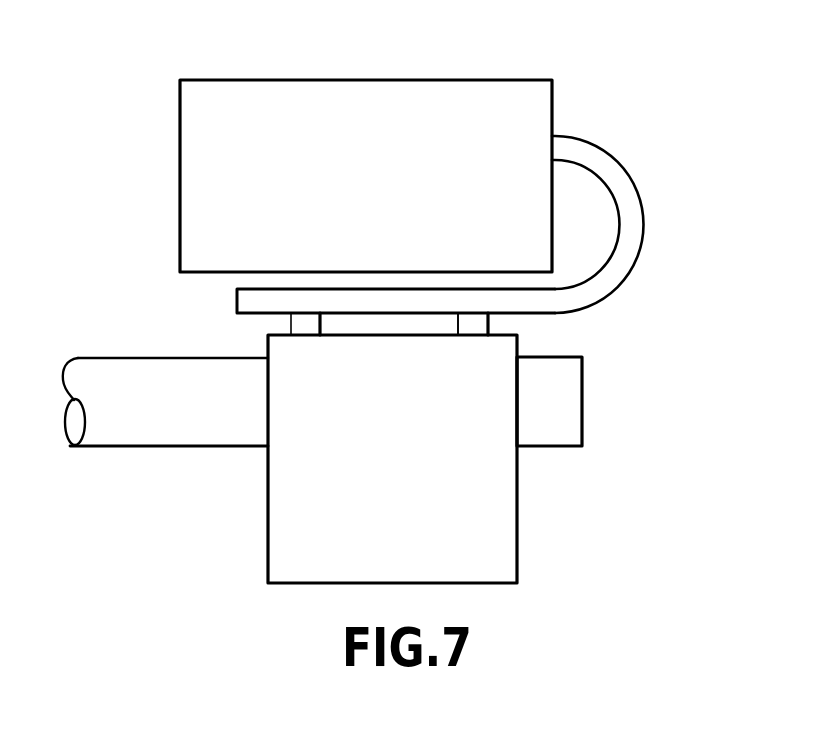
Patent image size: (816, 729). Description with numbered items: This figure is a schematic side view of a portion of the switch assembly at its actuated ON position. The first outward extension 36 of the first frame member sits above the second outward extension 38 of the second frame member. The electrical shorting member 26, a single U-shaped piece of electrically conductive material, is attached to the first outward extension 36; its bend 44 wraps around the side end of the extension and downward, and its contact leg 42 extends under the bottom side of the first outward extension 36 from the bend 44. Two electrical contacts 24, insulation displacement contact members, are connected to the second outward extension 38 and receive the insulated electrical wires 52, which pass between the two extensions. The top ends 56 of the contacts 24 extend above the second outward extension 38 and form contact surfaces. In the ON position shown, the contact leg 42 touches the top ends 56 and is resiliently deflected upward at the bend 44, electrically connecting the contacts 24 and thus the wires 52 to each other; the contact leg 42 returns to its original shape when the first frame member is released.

The electrical contacts 24 is at (458, 335).
The electrical shorting member 26 is at (638, 188).
The first outward extension 36 is at (452, 80).
The second outward extension 38 is at (517, 548).
The contact leg 42 is at (238, 300).
The bend 44 is at (638, 263).
The insulated electrical wires 52 is at (582, 395).
The top ends of the contacts 56 is at (307, 315).